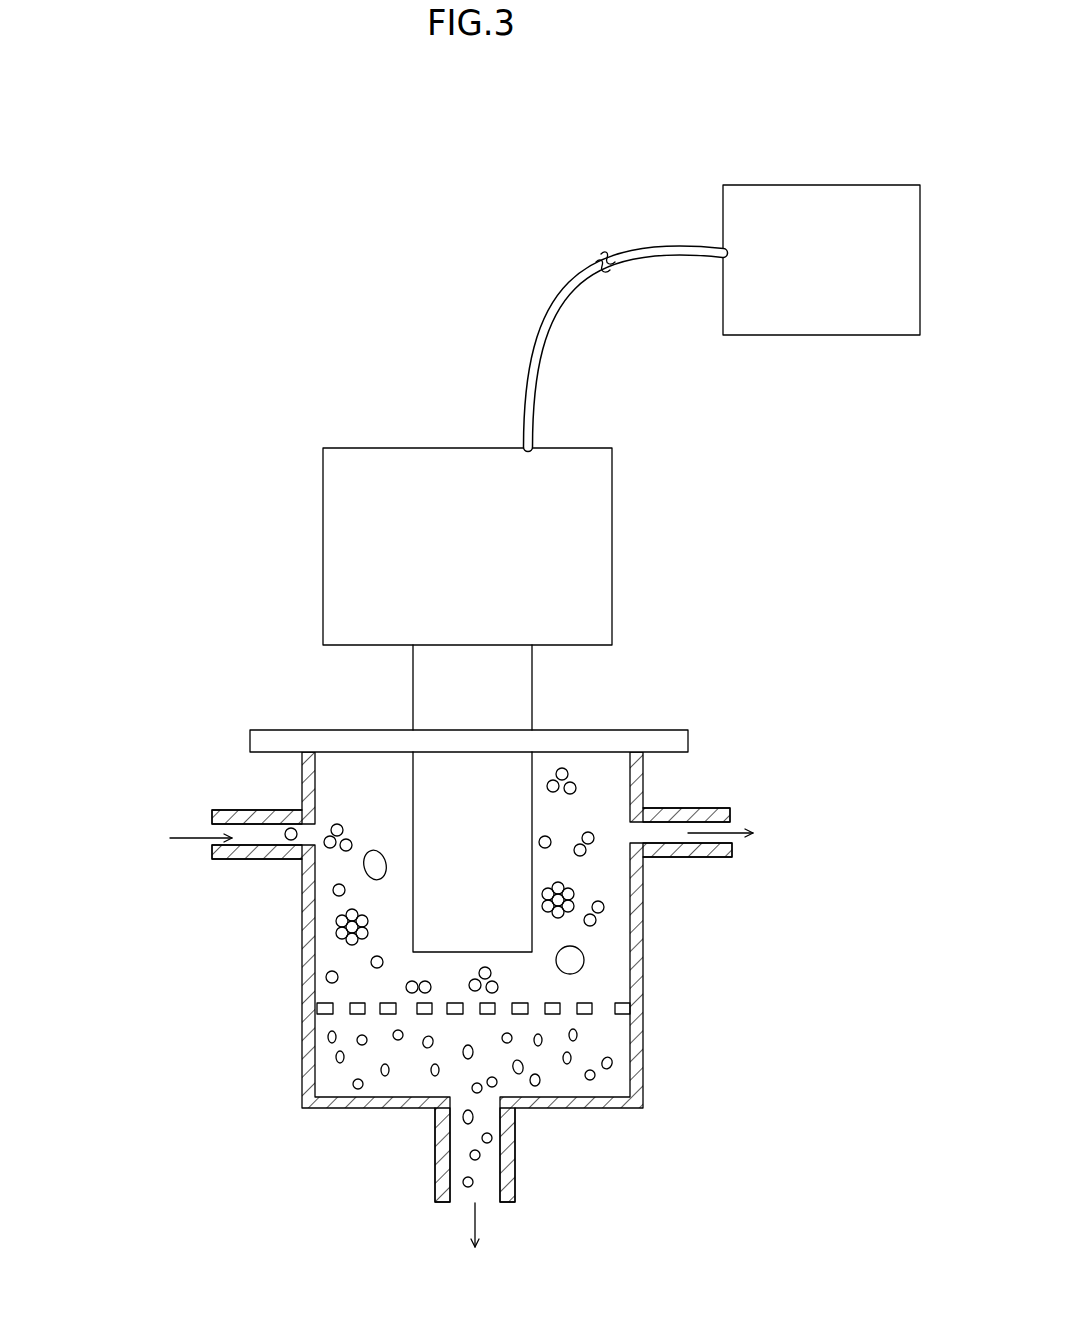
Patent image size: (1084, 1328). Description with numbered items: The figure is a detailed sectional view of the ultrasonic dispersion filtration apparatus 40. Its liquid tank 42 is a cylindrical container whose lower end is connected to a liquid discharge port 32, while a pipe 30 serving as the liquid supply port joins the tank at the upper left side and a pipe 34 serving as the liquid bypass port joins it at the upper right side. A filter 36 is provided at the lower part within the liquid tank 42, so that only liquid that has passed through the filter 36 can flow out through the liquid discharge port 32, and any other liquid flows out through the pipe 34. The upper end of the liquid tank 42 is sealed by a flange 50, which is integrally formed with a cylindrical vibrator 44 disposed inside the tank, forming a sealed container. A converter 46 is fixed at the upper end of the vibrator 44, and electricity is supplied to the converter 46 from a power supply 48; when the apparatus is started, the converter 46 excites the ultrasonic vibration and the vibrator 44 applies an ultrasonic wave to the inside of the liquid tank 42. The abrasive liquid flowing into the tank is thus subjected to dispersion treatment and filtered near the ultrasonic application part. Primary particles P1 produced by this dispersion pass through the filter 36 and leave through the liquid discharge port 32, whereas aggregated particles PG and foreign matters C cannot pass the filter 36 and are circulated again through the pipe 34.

The pipe (liquid supply port) 30 is at (267, 860).
The liquid discharge port 32 is at (515, 1153).
The pipe (liquid bypass port) 34 is at (718, 807).
The filter 36 is at (583, 1014).
The ultrasonic dispersion filtration apparatus 40 is at (357, 322).
The liquid tank 42 is at (612, 937).
The vibrator 44 is at (413, 790).
The converter 46 is at (323, 528).
The power supply 48 is at (740, 337).
The flange 50 is at (635, 729).
The aggregated particles PG is at (340, 937).
The foreign matters C is at (584, 960).
The primary particles P1 is at (357, 1090).